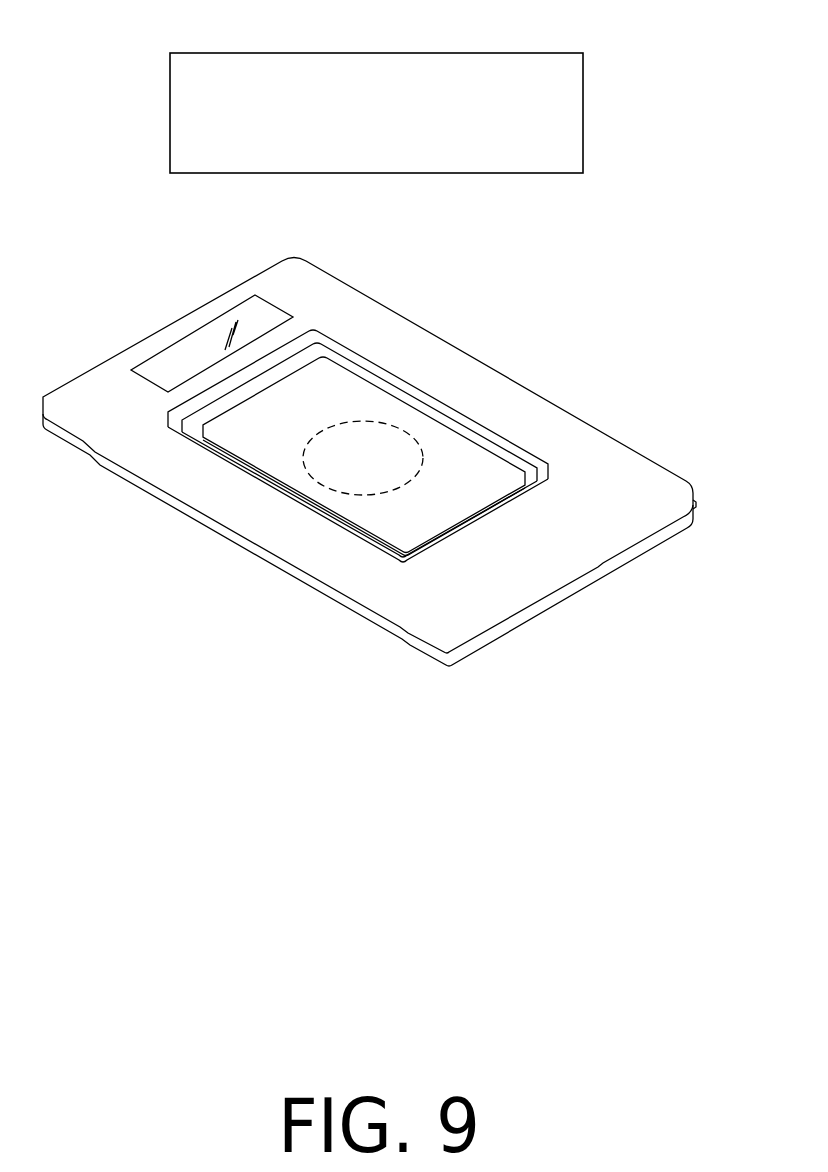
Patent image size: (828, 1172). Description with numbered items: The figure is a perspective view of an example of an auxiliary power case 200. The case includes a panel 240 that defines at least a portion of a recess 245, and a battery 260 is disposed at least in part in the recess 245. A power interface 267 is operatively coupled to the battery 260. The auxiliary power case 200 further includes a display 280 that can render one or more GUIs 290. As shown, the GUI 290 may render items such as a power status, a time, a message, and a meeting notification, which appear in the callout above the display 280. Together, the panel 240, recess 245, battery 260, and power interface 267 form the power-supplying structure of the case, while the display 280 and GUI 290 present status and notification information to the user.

The auxiliary power case 200 is at (576, 357).
The housing top surface 240 is at (630, 462).
The recess 245 is at (537, 485).
The battery 260 is at (452, 437).
The power interface 267 is at (350, 423).
The display 280 is at (187, 348).
The GUI 290 is at (250, 318).